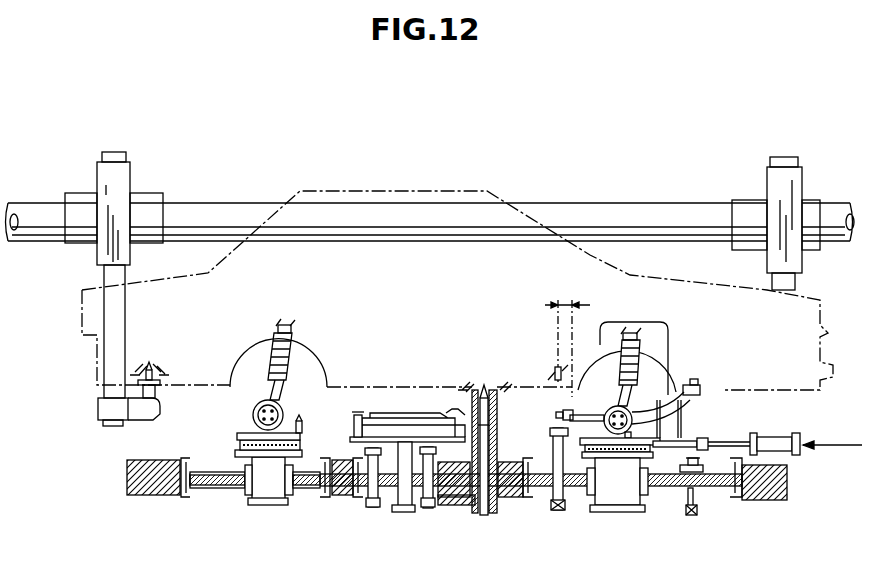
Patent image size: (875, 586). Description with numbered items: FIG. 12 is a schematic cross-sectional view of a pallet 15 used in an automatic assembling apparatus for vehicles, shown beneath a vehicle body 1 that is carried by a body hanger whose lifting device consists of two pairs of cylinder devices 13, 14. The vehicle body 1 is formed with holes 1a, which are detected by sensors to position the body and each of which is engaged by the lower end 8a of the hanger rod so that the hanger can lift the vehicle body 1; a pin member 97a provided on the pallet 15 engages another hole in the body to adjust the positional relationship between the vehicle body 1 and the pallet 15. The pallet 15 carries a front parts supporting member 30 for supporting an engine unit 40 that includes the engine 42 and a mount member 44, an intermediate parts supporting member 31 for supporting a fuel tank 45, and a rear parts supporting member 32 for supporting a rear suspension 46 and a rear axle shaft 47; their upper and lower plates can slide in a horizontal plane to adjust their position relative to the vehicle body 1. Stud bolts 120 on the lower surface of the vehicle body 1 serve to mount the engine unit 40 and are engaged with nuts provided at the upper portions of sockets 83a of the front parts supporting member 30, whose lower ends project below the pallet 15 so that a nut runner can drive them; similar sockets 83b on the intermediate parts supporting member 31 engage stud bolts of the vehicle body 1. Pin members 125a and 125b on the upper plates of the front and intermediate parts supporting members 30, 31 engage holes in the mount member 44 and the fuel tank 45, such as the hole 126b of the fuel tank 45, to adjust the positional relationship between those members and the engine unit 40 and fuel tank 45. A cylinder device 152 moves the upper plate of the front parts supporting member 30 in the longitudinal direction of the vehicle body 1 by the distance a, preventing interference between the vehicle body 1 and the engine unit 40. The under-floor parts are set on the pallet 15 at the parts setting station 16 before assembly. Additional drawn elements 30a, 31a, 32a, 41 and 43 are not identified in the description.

The vehicle body 1 is at (415, 190).
The holes 1a is at (146, 364).
The lower end of the rod of the body hanger 8a is at (158, 366).
The cylinder devices 13 is at (803, 181).
The cylinder devices 14 is at (97, 176).
The pallet 15 is at (160, 494).
The parts setting station 16 is at (483, 384).
The front parts supporting member 30 is at (628, 499).
The rear slide stop block 30a is at (723, 494).
The intermediate parts supporting member 31 is at (404, 508).
The central bearing block 31a is at (462, 501).
The rear parts supporting member 32 is at (266, 501).
The front slide shaft 32a is at (200, 488).
The engine unit 40 is at (645, 322).
The wheel 41 is at (657, 378).
The engine 42 is at (638, 356).
The rear ball joint 43 is at (612, 409).
The mount member 44 is at (672, 392).
The fuel tank 45 is at (418, 412).
The rear suspension 46 is at (290, 356).
The rear axle shaft 47 is at (253, 413).
The sockets 83a is at (560, 509).
The sockets 83b is at (371, 508).
The pin member 97a is at (497, 425).
The stud bolts 120 is at (556, 376).
The pin member 125a is at (712, 442).
The pin member 125b is at (355, 412).
The hole 126b is at (356, 426).
The cylinder device 152 is at (783, 433).
The distance a is at (567, 338).